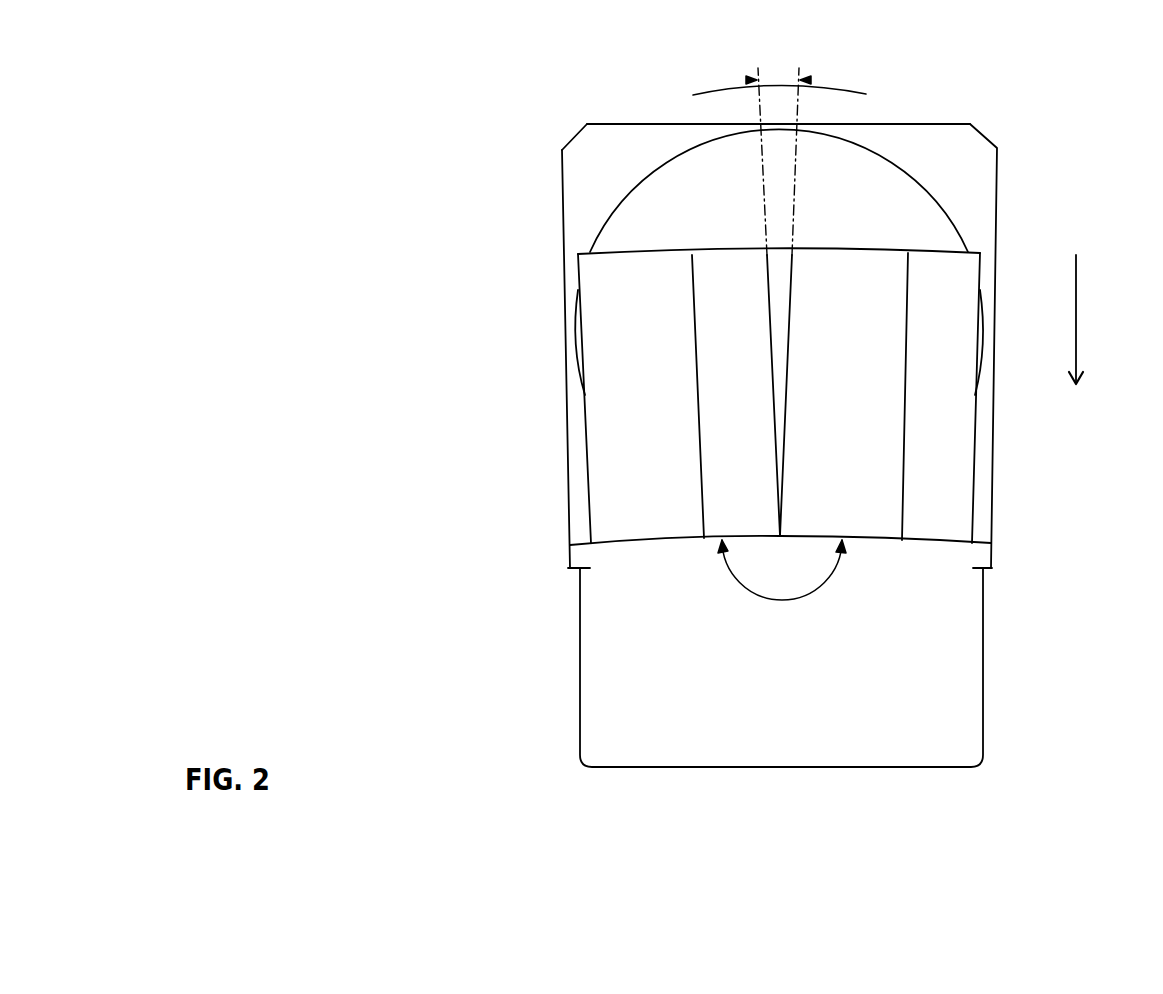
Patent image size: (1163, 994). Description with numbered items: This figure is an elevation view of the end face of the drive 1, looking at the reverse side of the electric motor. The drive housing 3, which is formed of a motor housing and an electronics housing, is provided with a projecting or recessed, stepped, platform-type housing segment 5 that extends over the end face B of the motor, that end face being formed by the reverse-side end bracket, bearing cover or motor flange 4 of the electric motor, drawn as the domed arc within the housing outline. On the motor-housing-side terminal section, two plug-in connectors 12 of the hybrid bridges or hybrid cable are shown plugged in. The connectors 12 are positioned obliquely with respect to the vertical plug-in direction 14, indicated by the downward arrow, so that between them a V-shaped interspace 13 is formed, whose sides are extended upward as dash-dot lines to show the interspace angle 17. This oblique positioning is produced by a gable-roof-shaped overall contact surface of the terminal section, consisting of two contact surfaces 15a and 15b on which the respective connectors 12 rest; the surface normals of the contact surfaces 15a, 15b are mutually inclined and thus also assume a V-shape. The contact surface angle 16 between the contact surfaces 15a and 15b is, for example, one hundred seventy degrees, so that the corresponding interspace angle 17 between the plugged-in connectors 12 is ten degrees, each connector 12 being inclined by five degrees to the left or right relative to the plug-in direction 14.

The drive 1 is at (960, 124).
The drive housing 3 is at (997, 192).
The motor flange 4 is at (702, 178).
The housing segment 5 is at (630, 662).
The plug-in connector 12 is at (628, 460).
The V-shaped interspace 13 is at (780, 340).
The plug-in direction 14 is at (1076, 318).
The first contact surface 15a is at (657, 528).
The second contact surface 15b is at (812, 524).
The contact surface angle 16 is at (787, 598).
The interspace angle 17 is at (843, 83).
The end face B is at (600, 187).